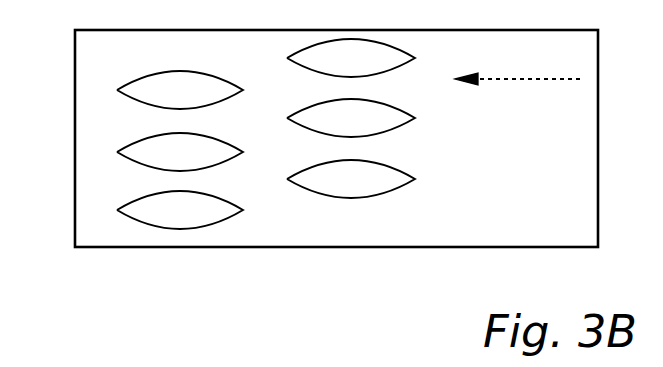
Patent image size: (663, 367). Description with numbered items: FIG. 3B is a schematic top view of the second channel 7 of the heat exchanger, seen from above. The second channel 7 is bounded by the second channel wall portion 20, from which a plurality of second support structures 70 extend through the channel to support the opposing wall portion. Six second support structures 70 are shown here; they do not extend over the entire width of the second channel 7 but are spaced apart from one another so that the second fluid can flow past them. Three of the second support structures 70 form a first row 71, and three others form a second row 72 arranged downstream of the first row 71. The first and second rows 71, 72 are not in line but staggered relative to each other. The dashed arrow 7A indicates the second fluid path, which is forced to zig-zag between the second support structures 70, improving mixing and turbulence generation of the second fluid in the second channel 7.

The second channel wall portion 20 is at (110, 235).
The second channel 7 is at (580, 212).
The second fluid path 7A is at (490, 80).
The second support structures 70 is at (207, 236).
The first row 71 is at (374, 203).
The second row 72 is at (177, 236).